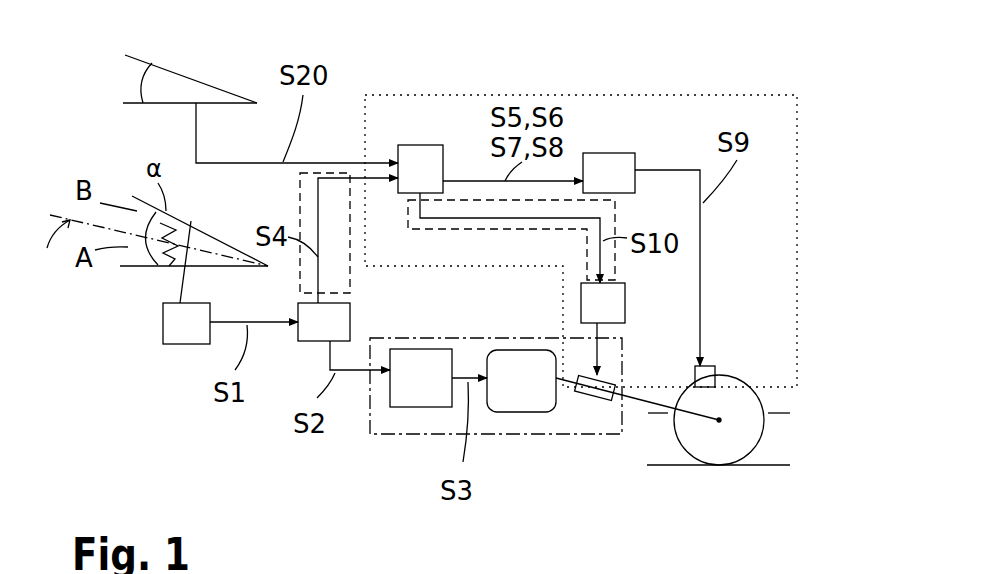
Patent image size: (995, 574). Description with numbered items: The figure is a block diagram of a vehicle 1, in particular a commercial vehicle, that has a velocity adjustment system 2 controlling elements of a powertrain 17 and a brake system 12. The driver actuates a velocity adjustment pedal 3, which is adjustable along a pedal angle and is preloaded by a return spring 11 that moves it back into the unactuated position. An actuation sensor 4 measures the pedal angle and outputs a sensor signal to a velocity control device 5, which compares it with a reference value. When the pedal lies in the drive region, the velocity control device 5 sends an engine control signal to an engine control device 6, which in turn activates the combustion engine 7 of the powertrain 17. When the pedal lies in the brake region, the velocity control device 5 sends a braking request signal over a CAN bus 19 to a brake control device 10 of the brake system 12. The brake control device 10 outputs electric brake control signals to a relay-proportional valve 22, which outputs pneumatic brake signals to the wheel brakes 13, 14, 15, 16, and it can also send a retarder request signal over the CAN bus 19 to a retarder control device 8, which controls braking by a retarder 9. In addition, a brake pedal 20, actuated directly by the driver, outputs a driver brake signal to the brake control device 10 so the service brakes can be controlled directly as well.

The vehicle 1 is at (822, 0).
The velocity adjustment system 2 is at (180, 432).
The velocity adjustment pedal 3 is at (208, 229).
The actuation sensor 4 is at (183, 338).
The velocity control device 5 is at (310, 330).
The engine control device 6 is at (428, 409).
The combustion engine 7 is at (519, 402).
The retarder control device 8 is at (625, 300).
The retarder 9 is at (590, 398).
The brake control device 10 is at (430, 145).
The return spring 11 is at (167, 263).
The brake system 12 is at (642, 92).
The wheel brake 13 is at (743, 327).
The wheel brake 14 is at (705, 376).
The wheel brake 15 is at (705, 376).
The wheel brake 16 is at (710, 365).
The powertrain 17 is at (370, 435).
The CAN bus 19 is at (350, 293).
The brake pedal 20 is at (152, 64).
The relay-proportional valve 22 is at (612, 153).